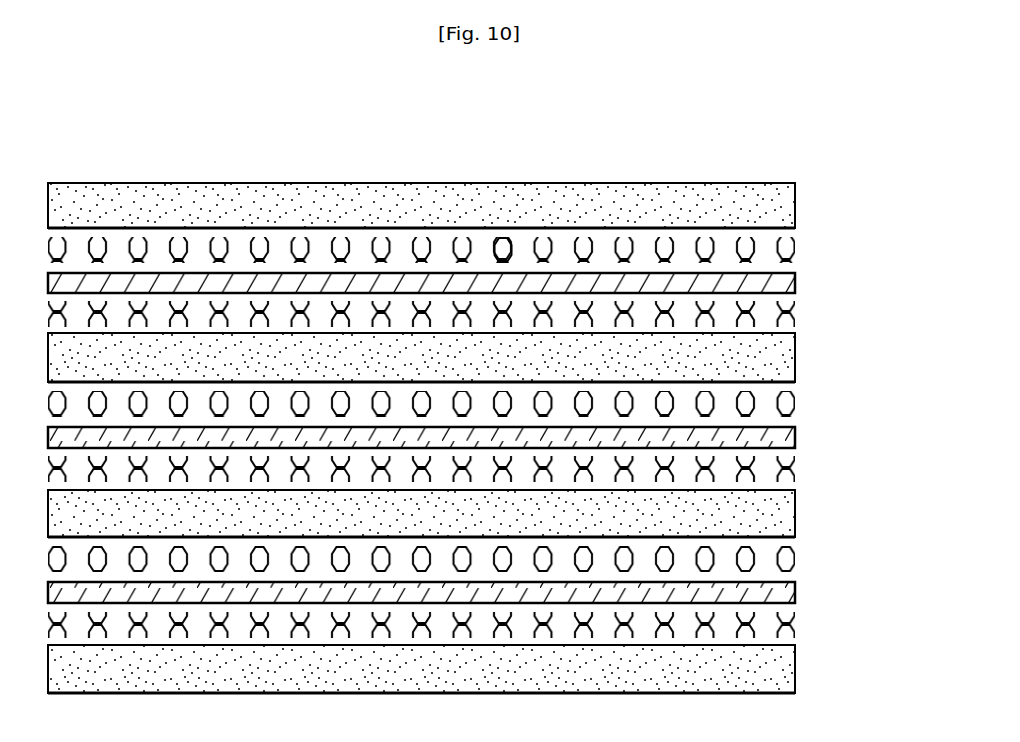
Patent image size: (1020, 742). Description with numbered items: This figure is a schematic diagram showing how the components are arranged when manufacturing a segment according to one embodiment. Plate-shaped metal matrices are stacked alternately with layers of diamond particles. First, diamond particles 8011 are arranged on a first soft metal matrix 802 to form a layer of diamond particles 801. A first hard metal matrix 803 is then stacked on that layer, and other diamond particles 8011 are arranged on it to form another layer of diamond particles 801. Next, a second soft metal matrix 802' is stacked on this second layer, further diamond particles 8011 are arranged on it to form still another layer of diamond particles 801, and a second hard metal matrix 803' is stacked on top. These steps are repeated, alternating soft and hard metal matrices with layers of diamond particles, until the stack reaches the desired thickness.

The layer of diamond particles 801 is at (797, 247).
The diamond particles 8011 is at (503, 237).
The first soft metal matrix 802 is at (469, 190).
The first hard metal matrix 803 is at (466, 314).
The second soft metal matrix 802' is at (468, 394).
The second hard metal matrix 803' is at (473, 484).